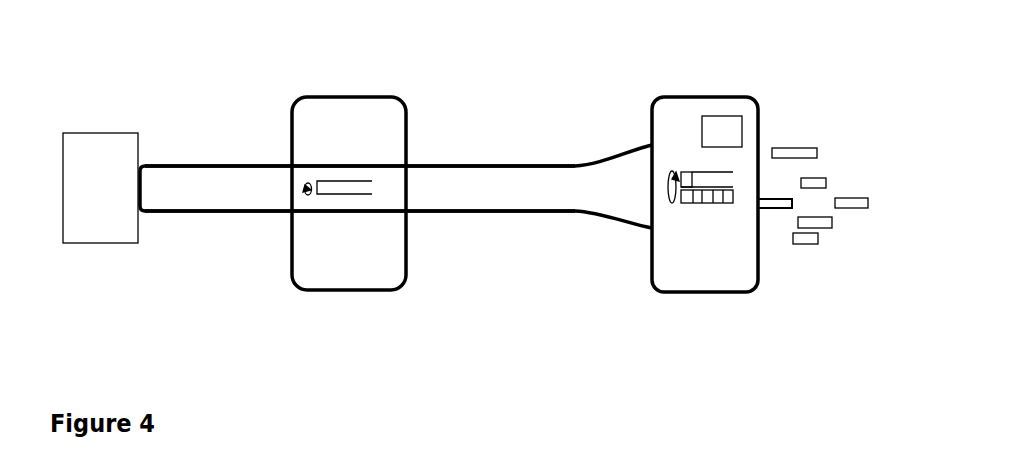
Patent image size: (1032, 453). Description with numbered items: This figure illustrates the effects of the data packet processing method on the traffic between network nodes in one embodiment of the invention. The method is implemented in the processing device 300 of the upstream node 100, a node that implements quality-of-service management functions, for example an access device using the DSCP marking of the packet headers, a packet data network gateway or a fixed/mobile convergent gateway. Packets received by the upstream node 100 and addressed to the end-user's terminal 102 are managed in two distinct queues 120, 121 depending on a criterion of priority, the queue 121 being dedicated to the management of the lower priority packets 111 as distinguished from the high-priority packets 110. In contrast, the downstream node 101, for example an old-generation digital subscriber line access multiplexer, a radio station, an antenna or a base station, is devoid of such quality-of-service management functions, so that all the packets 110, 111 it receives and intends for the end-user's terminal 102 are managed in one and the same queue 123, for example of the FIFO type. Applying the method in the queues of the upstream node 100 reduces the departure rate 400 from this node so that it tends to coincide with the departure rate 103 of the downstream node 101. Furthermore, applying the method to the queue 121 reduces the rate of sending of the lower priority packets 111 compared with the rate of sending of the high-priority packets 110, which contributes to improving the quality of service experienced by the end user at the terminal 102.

The upstream node 100 is at (707, 97).
The downstream node 101 is at (340, 95).
The end-user's terminal 102 is at (97, 132).
The departure rate of the downstream node 103 is at (203, 163).
The high-priority packets 110 is at (685, 172).
The lower priority packets 111 is at (720, 204).
The queue 120 is at (672, 182).
The queue 121 is at (668, 196).
The queue 123 is at (303, 192).
The processing device 300 is at (730, 117).
The departure rate of the upstream node 400 is at (500, 165).